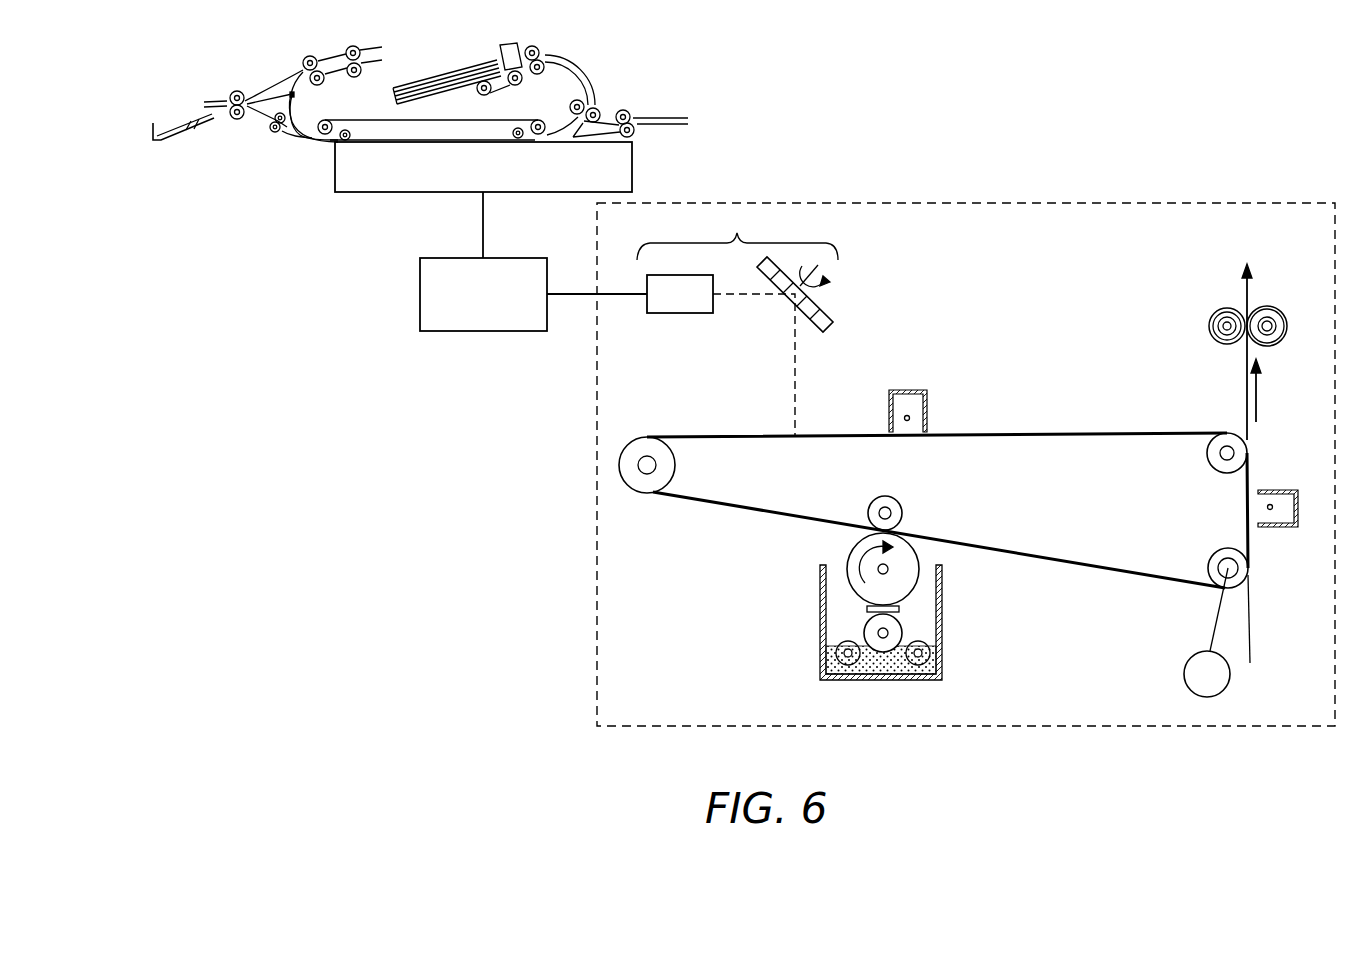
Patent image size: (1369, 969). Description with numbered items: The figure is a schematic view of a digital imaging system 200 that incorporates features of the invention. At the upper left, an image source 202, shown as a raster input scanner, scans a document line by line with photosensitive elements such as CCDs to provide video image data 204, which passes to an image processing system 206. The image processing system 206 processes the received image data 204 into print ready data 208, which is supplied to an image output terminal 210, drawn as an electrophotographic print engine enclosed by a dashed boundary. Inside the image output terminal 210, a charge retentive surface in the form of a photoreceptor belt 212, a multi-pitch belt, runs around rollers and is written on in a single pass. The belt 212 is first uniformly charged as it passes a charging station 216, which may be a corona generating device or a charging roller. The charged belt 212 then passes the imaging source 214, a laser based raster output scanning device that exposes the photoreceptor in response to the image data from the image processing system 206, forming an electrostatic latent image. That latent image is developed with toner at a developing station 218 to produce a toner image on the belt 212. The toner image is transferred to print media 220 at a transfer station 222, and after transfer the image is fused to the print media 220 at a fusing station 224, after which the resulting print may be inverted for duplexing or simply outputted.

The digital imaging system 200 is at (1147, 103).
The image source 202 is at (352, 189).
The video image data 204 is at (483, 212).
The image processing system 206 is at (467, 327).
The print ready data 208 is at (588, 297).
The image output terminal 210 is at (998, 203).
The photoreceptor belt 212 is at (1000, 435).
The imaging source 214 is at (758, 230).
The charging station 216 is at (910, 390).
The developing station 218 is at (910, 680).
The print media 220 is at (1250, 622).
The transfer station 222 is at (1268, 488).
The fusing station 224 is at (1322, 278).